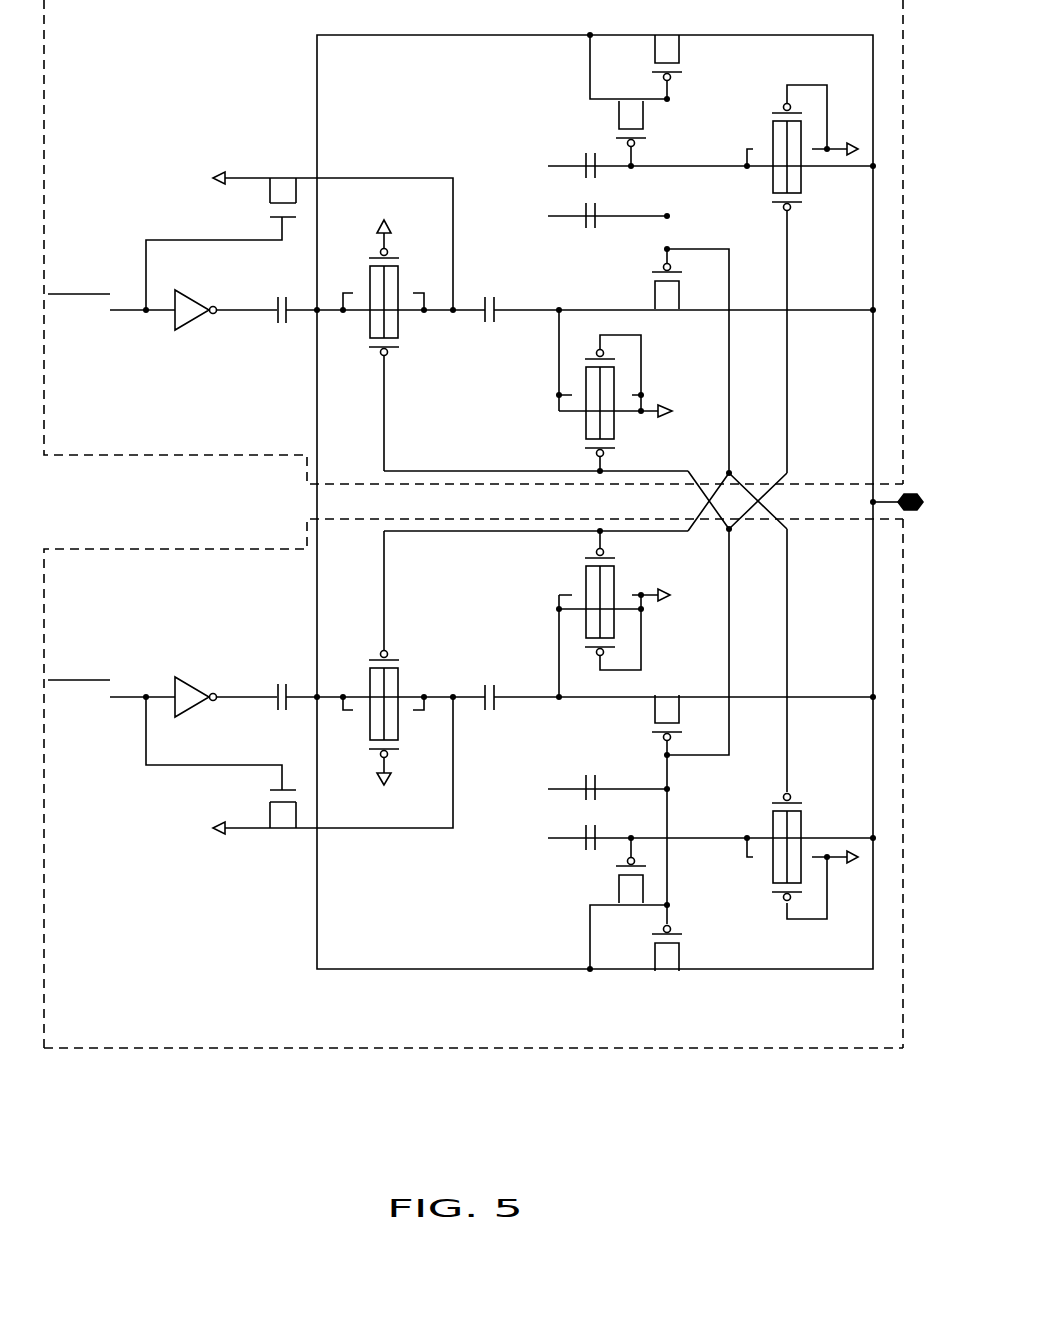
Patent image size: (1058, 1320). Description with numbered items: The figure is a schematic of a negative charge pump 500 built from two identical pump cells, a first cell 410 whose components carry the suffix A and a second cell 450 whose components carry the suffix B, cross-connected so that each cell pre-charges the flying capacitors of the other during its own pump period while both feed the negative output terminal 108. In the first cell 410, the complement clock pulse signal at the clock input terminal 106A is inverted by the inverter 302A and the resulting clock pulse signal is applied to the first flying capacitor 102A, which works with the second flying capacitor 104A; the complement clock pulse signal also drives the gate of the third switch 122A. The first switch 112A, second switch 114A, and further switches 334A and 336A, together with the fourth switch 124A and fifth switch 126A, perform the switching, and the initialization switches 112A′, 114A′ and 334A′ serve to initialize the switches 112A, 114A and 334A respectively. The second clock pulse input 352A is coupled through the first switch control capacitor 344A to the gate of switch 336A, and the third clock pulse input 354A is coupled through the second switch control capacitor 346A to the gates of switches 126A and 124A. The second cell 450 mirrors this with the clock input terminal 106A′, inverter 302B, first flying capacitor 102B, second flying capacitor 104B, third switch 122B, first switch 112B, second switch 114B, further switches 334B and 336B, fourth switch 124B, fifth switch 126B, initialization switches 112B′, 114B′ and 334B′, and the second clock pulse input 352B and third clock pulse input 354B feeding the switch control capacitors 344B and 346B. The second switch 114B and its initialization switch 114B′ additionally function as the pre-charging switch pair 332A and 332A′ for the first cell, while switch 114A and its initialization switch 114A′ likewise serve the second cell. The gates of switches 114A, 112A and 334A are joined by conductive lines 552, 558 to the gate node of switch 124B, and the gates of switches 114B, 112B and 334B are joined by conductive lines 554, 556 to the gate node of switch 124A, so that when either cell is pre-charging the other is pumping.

The negative charge pump 500 is at (888, 1134).
The first cell 410 is at (202, 457).
The second cell 450 is at (137, 548).
The clock input terminal 106A is at (111, 325).
The clock input terminal 106A′ is at (111, 711).
The inverter I1A 302A is at (216, 309).
The inverter I1B 302B is at (223, 696).
The flying capacitor C1A 102A is at (297, 318).
The flying capacitor C1B 102B is at (299, 694).
The flying capacitor C2A 104A is at (670, 313).
The flying capacitor C2B 104B is at (668, 699).
The switch M2A 112A is at (401, 345).
The switch M2B 112B is at (401, 658).
The switch M10A 112A′ is at (410, 268).
The switch M10B 112B′ is at (410, 735).
The switch M1A 114A is at (609, 391).
The switch M1B 114B is at (606, 617).
The switch M8A 114A′ is at (627, 380).
The switch M8B 114B′ is at (628, 625).
The switch M7A 122A is at (231, 224).
The switch M7B 122B is at (231, 783).
The switch M6A 124A is at (671, 295).
The switch M6B 124B is at (671, 713).
The switch M5A 126A is at (688, 53).
The switch M5B 126B is at (686, 984).
The switch M0B 332A is at (586, 580).
The switch M1B of pre-charging cell 332A′ is at (586, 628).
The switch M3A 334A is at (803, 289).
The switch M3B 334B is at (803, 823).
The switch M9A 334A′ is at (808, 95).
The switch M9B 334B′ is at (818, 893).
The switch M4A 336A is at (628, 69).
The switch M4B 336B is at (617, 892).
The switch control capacitor C3A 344A is at (710, 139).
The switch control capacitor C3B 344B is at (573, 847).
The switch control capacitor C4A 346A is at (641, 219).
The switch control capacitor C4B 346B is at (631, 825).
The clock pulse signal CLK2A input 352A is at (517, 157).
The clock pulse signal CLK2B input 352B is at (517, 828).
The clock pulse signal CLK3A input 354A is at (577, 207).
The clock pulse signal CLK3B input 354B is at (517, 777).
The conductive line 552 is at (437, 468).
The conductive line 554 is at (437, 534).
The conductive line 556 is at (740, 478).
The conductive line 558 is at (743, 522).
The output terminal VNEG 108 is at (916, 536).